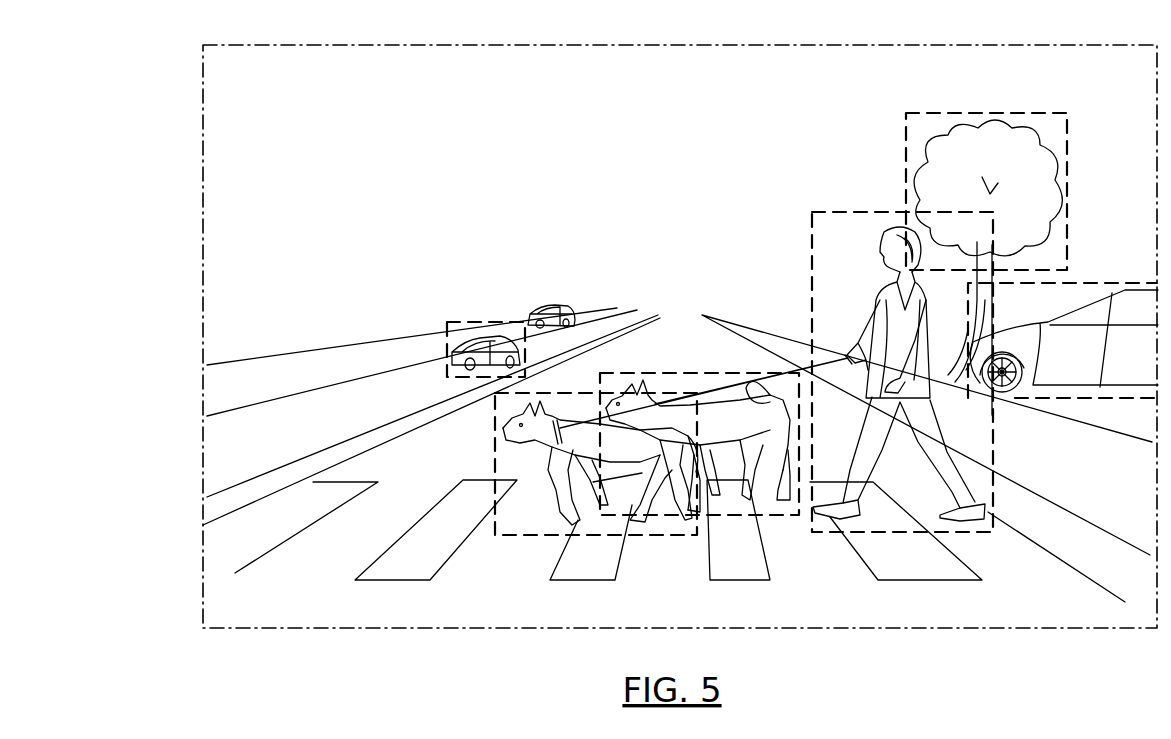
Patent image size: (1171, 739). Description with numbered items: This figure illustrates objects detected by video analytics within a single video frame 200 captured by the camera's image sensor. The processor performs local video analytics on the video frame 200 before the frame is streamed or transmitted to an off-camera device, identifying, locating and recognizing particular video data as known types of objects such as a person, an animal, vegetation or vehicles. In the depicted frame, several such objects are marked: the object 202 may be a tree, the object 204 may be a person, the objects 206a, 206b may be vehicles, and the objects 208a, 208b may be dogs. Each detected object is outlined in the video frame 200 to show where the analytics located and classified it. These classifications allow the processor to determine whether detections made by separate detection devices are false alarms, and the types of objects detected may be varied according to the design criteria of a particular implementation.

The video frame 200 is at (327, 44).
The object (tree) 202 is at (955, 113).
The object (person) 204 is at (866, 212).
The object (vehicle) 206a is at (455, 322).
The object (vehicle) 206b is at (1090, 283).
The object (dog) 208a is at (537, 537).
The object (dog) 208b is at (722, 371).